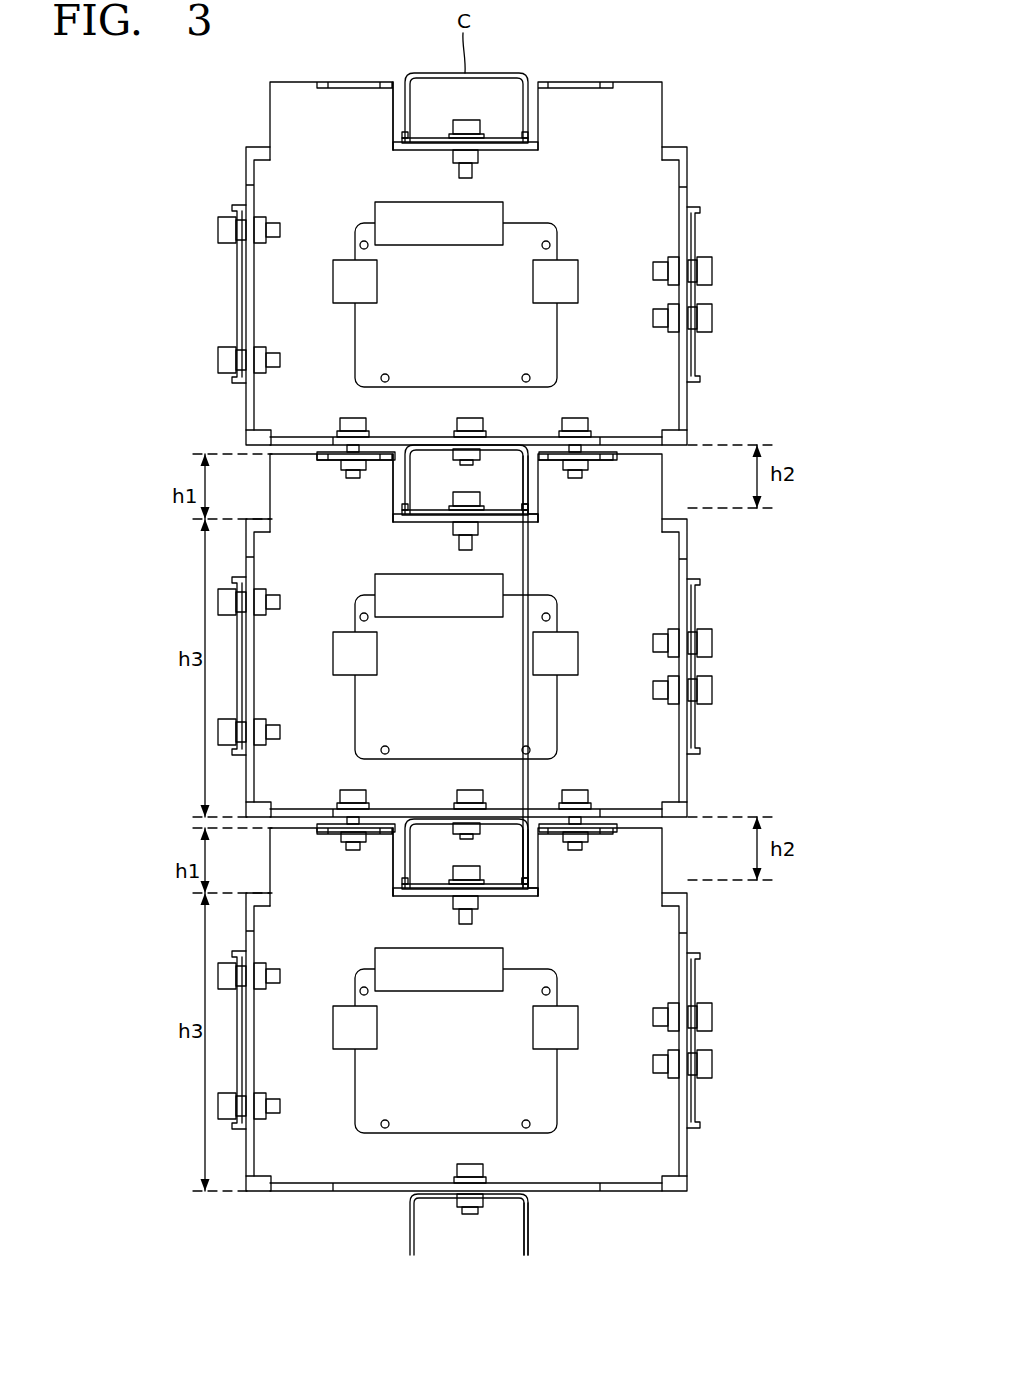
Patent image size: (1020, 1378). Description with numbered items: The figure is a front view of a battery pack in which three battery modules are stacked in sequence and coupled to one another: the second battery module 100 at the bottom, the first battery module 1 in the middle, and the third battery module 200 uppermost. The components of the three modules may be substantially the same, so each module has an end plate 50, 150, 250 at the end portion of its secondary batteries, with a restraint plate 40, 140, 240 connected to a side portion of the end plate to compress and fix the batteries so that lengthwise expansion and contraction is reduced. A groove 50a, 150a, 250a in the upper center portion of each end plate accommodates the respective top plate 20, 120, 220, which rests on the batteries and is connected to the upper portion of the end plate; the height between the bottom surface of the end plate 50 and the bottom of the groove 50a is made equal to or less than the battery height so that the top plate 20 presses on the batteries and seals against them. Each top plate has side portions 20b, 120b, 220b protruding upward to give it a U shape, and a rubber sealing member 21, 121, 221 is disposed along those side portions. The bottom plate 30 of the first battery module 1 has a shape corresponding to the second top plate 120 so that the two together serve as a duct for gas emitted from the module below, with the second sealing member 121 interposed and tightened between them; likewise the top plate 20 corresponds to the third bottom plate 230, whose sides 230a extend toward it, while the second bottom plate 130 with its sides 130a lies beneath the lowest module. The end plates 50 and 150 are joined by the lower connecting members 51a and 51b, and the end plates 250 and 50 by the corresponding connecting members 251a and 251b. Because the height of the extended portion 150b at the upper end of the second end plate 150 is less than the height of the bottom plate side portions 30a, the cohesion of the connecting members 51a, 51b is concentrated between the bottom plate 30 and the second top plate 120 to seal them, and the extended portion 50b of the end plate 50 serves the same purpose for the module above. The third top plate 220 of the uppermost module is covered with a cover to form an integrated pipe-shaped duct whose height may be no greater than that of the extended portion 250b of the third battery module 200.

The third battery module 200 is at (745, 92).
The first battery module 1 is at (725, 537).
The second battery module 100 is at (725, 911).
The support frame 250 is at (268, 292).
The end plate 50 is at (268, 694).
The second end plate 150 is at (268, 1074).
The first support portion 250a is at (392, 106).
The groove 50a is at (392, 485).
The first support portion 150a is at (392, 859).
The extended portion 250b is at (272, 111).
The second support portion 50b is at (272, 483).
The extended portion 150b is at (272, 857).
The first foot 251a is at (585, 428).
The lower connecting member 51a is at (585, 800).
The second foot 251b is at (345, 428).
The lower connecting member 51b is at (345, 800).
The third top plate 220 is at (402, 150).
The top plate 20 is at (402, 522).
The second top plate 120 is at (402, 896).
The third sealing member 221 is at (402, 141).
The first sealing member 21 is at (402, 513).
The second sealing member 121 is at (402, 887).
The bracket fastener 220b is at (530, 137).
The top plate side portions 20b is at (535, 516).
The bracket end 120b is at (535, 890).
The third bottom plate 230 is at (500, 447).
The bottom plate 30 is at (500, 820).
The second bottom plate 130 is at (505, 1194).
The sides 230a is at (530, 494).
The bottom plate side portions 30a is at (530, 870).
The coupling bracket leg 130a is at (530, 1240).
The side rail 240 is at (700, 225).
The restraint plate 40 is at (692, 608).
The side rail 140 is at (692, 970).